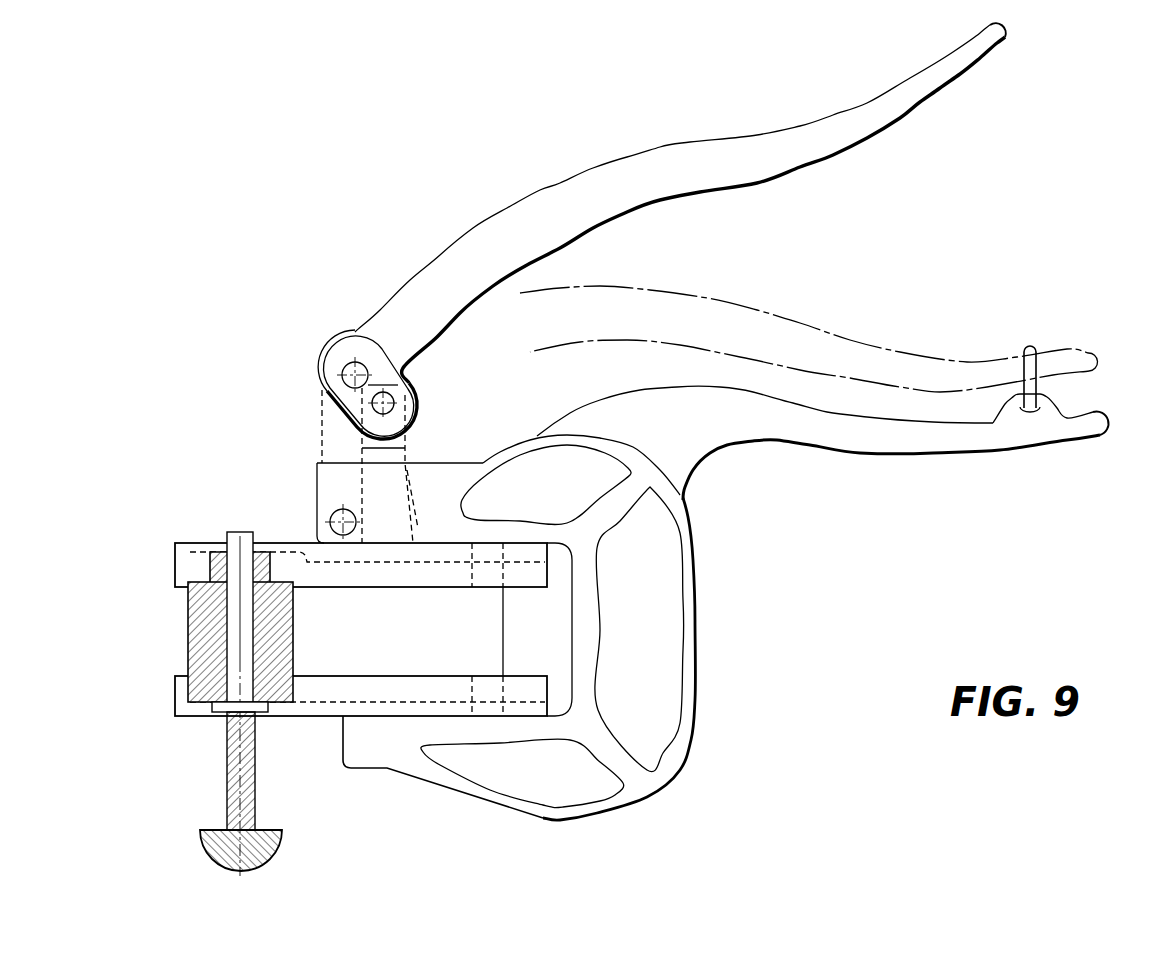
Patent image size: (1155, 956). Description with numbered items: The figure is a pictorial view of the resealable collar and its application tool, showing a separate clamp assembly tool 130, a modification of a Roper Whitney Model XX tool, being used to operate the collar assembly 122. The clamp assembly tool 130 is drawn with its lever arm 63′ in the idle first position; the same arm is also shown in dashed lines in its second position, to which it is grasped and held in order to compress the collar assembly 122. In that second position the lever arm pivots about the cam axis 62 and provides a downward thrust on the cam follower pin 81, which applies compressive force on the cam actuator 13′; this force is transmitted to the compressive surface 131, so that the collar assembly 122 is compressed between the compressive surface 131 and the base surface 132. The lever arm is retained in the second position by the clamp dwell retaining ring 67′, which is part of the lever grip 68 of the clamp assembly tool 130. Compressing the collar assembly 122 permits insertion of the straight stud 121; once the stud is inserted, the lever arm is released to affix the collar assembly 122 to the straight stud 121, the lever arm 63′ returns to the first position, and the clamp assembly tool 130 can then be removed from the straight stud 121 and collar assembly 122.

The lever arm 63′ is at (716, 143).
The clamp dwell retaining ring 67′ is at (1030, 346).
The cam axis 62 is at (325, 397).
The cam actuator 13′ is at (420, 402).
The cam follower pin 81 is at (377, 412).
The lever grip 68 is at (923, 457).
The clamp assembly tool 130 is at (696, 621).
The compressive surface 131 is at (175, 569).
The base surface 132 is at (175, 696).
The collar assembly 122 is at (186, 631).
The straight stud 121 is at (205, 849).